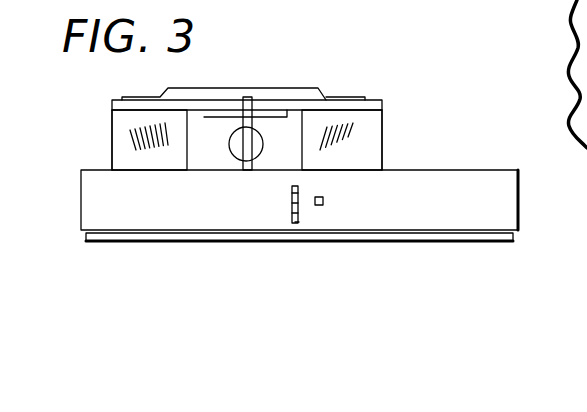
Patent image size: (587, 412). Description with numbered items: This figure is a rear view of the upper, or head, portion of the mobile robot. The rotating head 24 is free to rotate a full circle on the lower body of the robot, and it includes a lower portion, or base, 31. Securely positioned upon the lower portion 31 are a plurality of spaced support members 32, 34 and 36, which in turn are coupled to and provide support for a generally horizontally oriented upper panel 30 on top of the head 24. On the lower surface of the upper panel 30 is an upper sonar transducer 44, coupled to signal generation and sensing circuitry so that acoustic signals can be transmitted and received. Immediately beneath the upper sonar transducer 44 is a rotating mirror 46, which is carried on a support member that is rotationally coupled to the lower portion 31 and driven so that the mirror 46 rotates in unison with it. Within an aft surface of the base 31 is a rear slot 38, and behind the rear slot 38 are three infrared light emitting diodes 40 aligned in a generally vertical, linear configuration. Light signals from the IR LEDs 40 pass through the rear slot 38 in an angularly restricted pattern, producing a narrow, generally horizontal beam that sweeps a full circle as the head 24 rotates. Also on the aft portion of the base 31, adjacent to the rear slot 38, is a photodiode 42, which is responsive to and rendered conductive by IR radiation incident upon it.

The head 24 is at (406, 252).
The upper panel 30 is at (166, 98).
The lower portion 31 is at (410, 170).
The support member 32 is at (367, 163).
The support member 34 is at (128, 157).
The support member 36 is at (254, 95).
The rear slot 38 is at (300, 211).
The infrared light emitting diodes 40 is at (292, 200).
The photodiode 42 is at (323, 201).
The upper sonar transducer 44 is at (208, 117).
The rotating mirror 46 is at (262, 150).